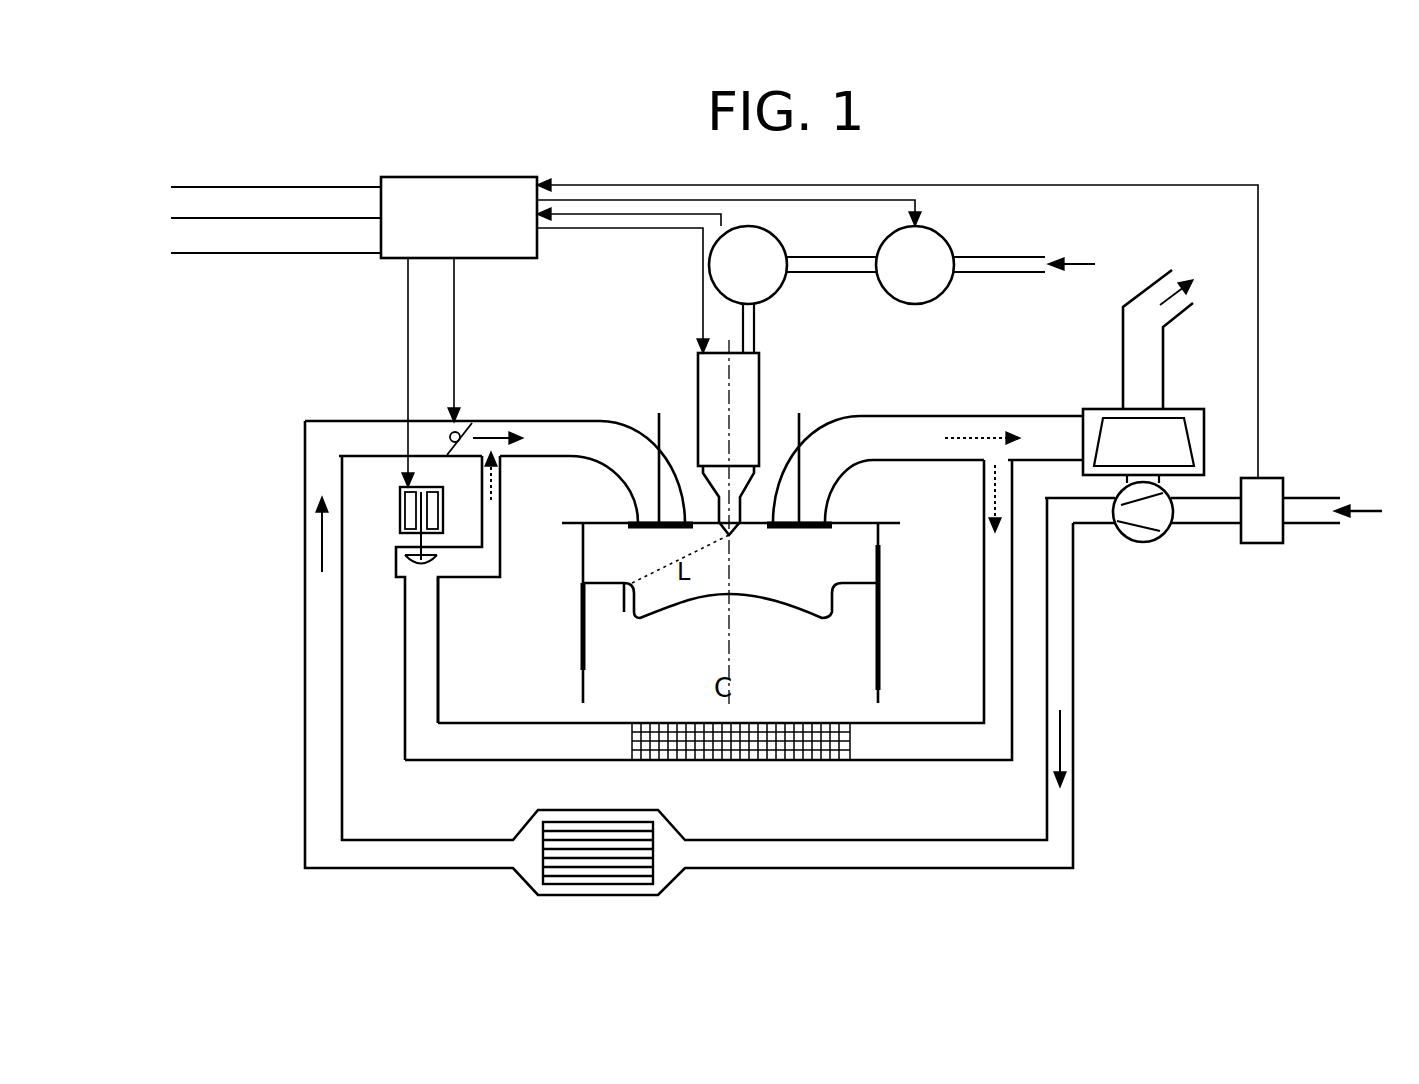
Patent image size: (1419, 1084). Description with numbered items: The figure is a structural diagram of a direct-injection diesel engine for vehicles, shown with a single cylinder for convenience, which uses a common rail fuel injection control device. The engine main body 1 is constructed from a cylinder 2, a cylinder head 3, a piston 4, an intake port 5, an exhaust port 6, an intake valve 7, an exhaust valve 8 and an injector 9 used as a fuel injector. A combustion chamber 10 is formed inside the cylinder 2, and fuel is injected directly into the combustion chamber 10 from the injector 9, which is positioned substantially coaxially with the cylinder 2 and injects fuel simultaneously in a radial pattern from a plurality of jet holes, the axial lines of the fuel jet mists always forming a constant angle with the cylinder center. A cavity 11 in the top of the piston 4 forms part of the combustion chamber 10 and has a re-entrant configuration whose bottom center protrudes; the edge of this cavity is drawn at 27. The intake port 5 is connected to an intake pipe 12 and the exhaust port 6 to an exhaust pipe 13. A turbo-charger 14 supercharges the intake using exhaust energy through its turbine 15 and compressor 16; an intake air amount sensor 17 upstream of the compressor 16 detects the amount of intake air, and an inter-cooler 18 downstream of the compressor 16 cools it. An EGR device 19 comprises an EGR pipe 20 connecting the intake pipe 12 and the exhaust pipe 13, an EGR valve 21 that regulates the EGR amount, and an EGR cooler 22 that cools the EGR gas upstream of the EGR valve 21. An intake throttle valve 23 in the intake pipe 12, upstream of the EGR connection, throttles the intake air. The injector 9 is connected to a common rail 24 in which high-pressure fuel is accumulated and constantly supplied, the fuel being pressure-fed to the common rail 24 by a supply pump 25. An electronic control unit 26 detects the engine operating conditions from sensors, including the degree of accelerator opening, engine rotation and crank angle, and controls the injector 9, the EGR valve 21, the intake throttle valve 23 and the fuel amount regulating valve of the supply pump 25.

The engine main body 1 is at (556, 645).
The cylinder 2 is at (878, 552).
The cylinder head 3 is at (875, 527).
The piston 4 is at (853, 648).
The intake port 5 is at (640, 468).
The exhaust port 6 is at (827, 468).
The intake valve 7 is at (656, 417).
The exhaust valve 8 is at (803, 419).
The injector 9 is at (748, 374).
The combustion chamber 10 is at (598, 560).
The cavity 11 is at (767, 595).
The intake pipe 12 is at (305, 725).
The exhaust pipe 13 is at (1003, 392).
The turbo-charger 14 is at (1100, 390).
The turbine 15 is at (1162, 433).
The compressor 16 is at (1148, 517).
The intake air amount sensor 17 is at (1268, 538).
The inter-cooler 18 is at (553, 862).
The EGR device 19 is at (360, 500).
The EGR pipe 20 is at (923, 760).
The EGR valve 21 is at (400, 497).
The EGR cooler 22 is at (773, 747).
The intake throttle valve 23 is at (470, 423).
The common rail 24 is at (770, 288).
The supply pump 25 is at (937, 288).
The electronic control unit 26 is at (478, 177).
The lip of cavity 27 is at (640, 622).